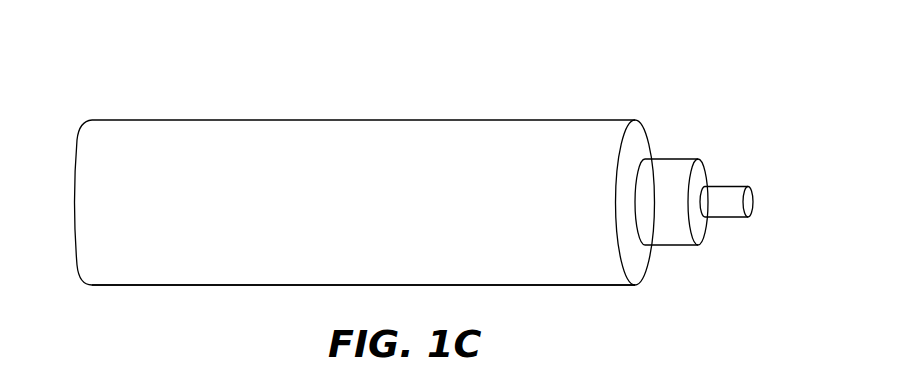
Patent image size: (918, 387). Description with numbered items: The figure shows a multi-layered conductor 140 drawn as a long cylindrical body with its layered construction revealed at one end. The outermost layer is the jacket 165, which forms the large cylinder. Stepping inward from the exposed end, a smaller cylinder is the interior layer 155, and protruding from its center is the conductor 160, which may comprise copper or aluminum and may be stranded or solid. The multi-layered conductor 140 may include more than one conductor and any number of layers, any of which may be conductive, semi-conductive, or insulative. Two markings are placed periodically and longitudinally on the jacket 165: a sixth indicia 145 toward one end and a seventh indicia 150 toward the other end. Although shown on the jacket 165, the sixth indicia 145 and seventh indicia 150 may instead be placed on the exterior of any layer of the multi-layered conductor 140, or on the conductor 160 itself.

The multi-layered conductor 140 is at (300, 111).
The sixth indicia 145 is at (138, 182).
The seventh indicia 150 is at (527, 190).
The interior layer 155 is at (672, 158).
The conductor 160 is at (727, 185).
The jacket 165 is at (212, 247).